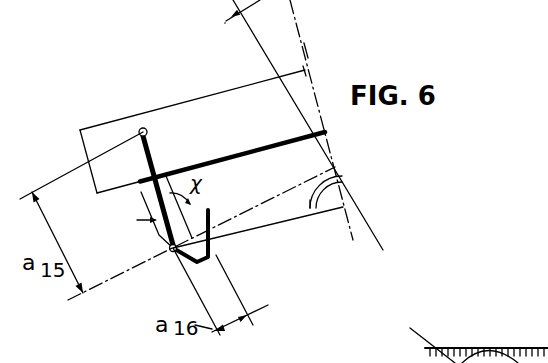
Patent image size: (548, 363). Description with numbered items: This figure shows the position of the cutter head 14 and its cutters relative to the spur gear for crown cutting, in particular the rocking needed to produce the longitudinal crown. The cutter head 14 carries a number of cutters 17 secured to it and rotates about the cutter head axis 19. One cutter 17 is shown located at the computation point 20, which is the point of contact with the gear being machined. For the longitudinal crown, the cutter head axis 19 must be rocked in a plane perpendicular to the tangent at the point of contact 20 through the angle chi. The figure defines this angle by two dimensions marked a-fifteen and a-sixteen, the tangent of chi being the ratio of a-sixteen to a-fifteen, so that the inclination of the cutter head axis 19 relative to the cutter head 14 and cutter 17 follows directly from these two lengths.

The cutter head 14 is at (192, 114).
The cutter 17 is at (142, 200).
The cutter head axis 19 is at (308, 50).
The computation point 20 is at (173, 253).